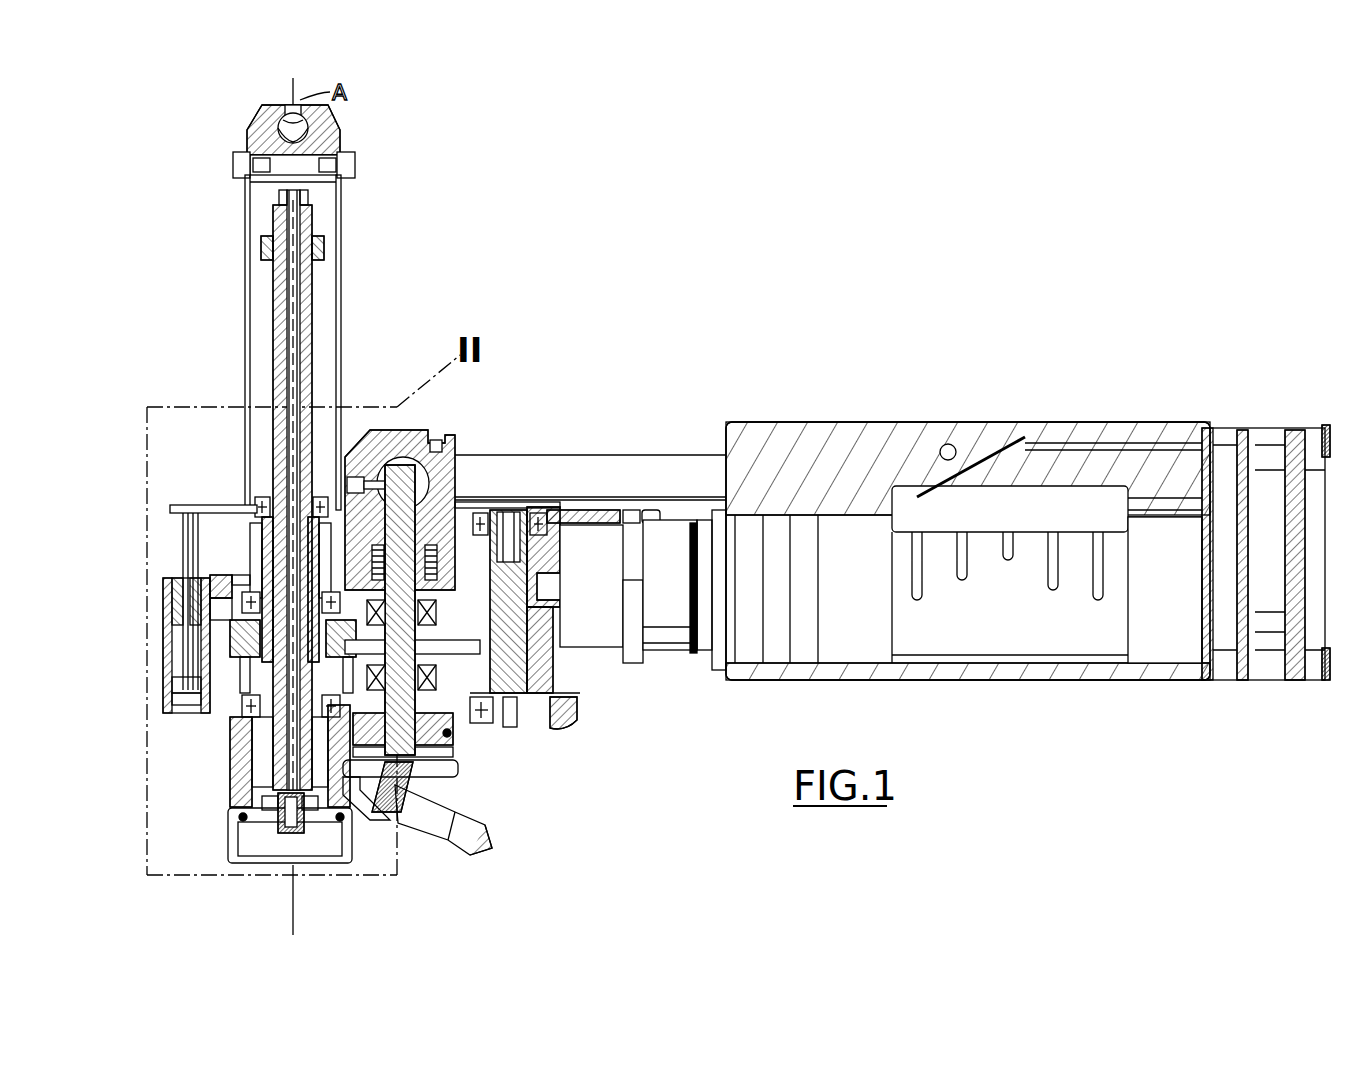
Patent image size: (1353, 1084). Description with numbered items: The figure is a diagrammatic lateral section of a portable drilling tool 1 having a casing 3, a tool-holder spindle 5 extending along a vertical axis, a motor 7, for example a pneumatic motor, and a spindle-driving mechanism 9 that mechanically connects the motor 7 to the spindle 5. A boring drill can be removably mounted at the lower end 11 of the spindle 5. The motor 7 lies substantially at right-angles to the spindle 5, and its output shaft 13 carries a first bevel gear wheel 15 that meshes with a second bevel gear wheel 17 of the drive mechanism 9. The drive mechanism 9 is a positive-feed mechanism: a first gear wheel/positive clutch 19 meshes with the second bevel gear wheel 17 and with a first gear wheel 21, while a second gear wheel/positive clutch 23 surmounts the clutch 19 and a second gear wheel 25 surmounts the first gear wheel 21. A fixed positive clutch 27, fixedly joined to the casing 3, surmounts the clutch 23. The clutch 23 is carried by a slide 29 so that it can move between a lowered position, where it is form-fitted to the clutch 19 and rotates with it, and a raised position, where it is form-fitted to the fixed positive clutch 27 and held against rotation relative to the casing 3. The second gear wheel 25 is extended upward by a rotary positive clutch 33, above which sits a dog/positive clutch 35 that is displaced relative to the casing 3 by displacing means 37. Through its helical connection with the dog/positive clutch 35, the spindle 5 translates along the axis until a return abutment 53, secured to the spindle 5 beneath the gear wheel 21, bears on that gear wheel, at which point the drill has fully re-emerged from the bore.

The portable drilling tool 1 is at (772, 343).
The casing 3 is at (345, 342).
The tool-holder spindle 5 is at (324, 306).
The motor 7 is at (838, 632).
The spindle-driving mechanism 9 is at (490, 727).
The lower end 11 is at (268, 830).
The output shaft 13 is at (548, 585).
The first bevel gear wheel 15 is at (537, 605).
The second bevel gear wheel 17 is at (545, 690).
The first gear wheel/positive clutch 19 is at (347, 780).
The first gear wheel 21 is at (250, 682).
The second gear wheel/positive clutch 23 is at (513, 660).
The second gear wheel 25 is at (262, 638).
The fixed positive clutch 27 is at (355, 565).
The slide 29 is at (405, 620).
The rotary positive clutch 33 is at (263, 552).
The dog/positive clutch 35 is at (281, 502).
The means for displacing the dog/positive clutch 37 is at (160, 617).
The return abutment 53 is at (253, 758).